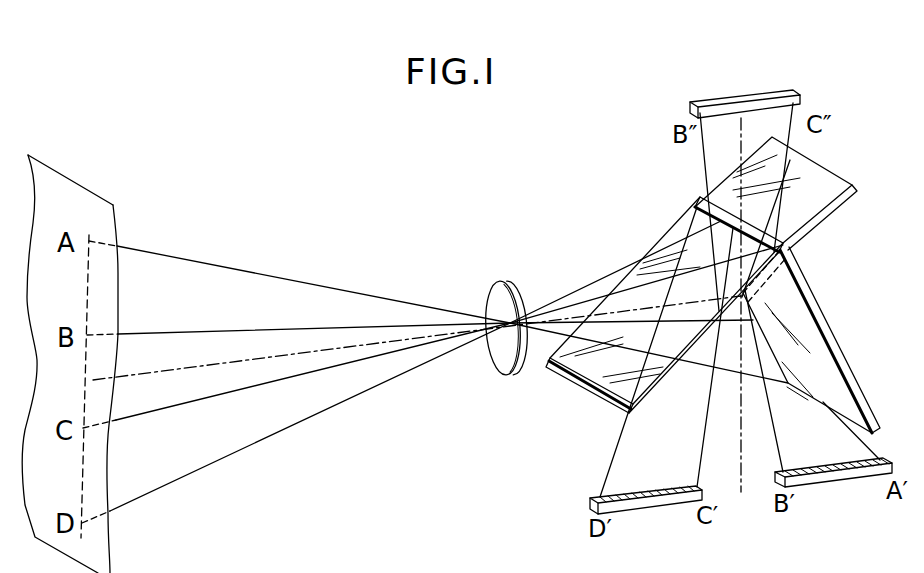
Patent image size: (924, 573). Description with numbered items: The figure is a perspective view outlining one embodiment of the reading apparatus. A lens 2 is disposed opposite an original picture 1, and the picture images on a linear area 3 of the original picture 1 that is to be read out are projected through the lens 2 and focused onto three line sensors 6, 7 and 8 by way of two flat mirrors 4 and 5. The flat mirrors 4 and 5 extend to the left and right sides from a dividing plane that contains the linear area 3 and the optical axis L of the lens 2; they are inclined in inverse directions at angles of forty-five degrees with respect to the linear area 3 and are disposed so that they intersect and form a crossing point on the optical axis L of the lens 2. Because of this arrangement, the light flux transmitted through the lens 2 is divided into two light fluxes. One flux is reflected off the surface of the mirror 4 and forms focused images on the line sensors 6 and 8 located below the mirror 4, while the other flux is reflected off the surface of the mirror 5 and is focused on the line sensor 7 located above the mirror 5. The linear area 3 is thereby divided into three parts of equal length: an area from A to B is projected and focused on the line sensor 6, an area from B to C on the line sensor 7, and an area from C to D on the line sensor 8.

The original picture 1 is at (56, 167).
The lens 2 is at (503, 374).
The linear area 3 is at (82, 300).
The flat mirror 4 is at (807, 296).
The flat mirror 5 is at (821, 224).
The line sensor 6 is at (848, 480).
The line sensor 7 is at (741, 101).
The line sensor 8 is at (660, 508).
The optical axis L is at (162, 372).